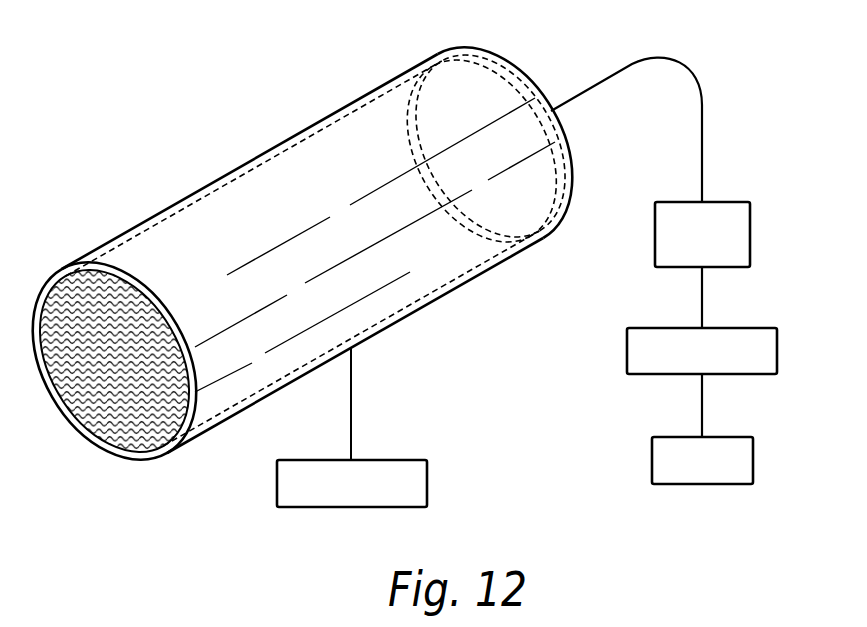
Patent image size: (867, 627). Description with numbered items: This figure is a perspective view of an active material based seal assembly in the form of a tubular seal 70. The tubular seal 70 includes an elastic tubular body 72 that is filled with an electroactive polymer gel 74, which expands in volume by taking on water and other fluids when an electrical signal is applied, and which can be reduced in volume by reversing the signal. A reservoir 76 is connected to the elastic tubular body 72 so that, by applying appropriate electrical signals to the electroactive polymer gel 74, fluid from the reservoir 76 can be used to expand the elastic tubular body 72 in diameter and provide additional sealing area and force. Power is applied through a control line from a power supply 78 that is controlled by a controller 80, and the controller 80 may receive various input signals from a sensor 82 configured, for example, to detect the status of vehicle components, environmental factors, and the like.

The tubular seal 70 is at (133, 155).
The elastic tubular body 72 is at (420, 245).
The electroactive polymer gel 74 is at (77, 347).
The reservoir 76 is at (428, 484).
The power supply 78 is at (752, 233).
The controller 80 is at (778, 350).
The sensor 82 is at (754, 463).